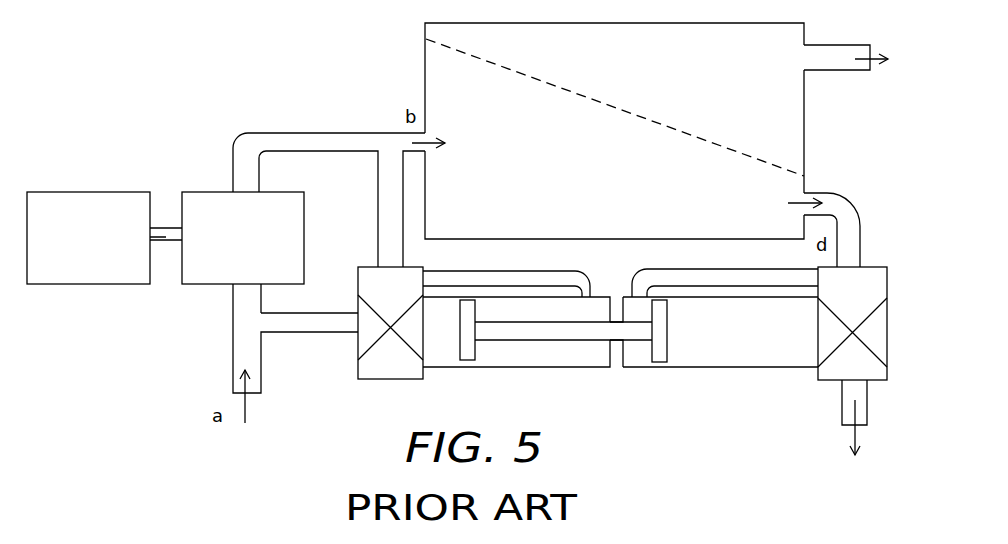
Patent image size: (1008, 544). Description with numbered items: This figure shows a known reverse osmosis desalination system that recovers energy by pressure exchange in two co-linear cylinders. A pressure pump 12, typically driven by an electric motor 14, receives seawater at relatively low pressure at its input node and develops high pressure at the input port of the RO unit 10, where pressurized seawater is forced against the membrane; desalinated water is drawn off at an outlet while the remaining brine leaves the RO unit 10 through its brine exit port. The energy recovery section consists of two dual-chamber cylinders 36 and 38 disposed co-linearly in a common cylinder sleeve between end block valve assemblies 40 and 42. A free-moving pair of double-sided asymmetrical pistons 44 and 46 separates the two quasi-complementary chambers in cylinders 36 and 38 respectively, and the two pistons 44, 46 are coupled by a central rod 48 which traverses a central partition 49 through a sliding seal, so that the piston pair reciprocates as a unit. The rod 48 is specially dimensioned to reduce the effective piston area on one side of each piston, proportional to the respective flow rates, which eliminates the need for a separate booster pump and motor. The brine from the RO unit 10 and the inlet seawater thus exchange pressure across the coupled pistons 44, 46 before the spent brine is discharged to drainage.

The RO unit 10 is at (804, 138).
The pressure pump 12 is at (253, 248).
The electric motor 14 is at (101, 248).
The dual-chamber cylinder 36 is at (522, 367).
The dual-chamber cylinder 38 is at (747, 367).
The end block valve assembly 40 is at (388, 372).
The end block valve assembly 42 is at (835, 370).
The double-sided asymmetrical piston 44 is at (467, 357).
The double-sided asymmetrical piston 46 is at (663, 345).
The central rod 48 is at (528, 333).
The central partition 49 is at (617, 358).